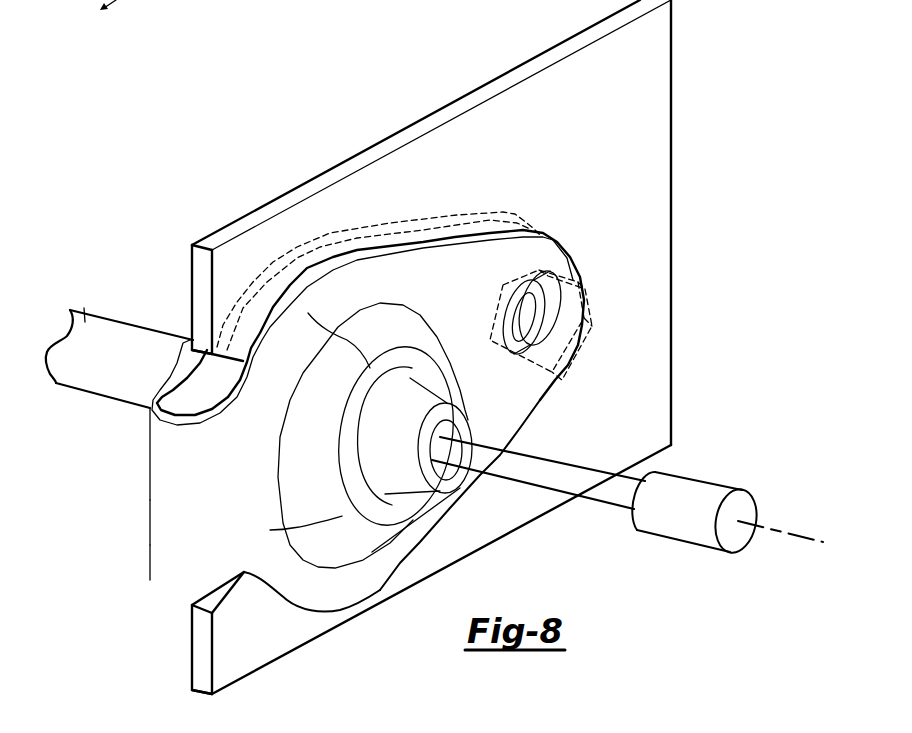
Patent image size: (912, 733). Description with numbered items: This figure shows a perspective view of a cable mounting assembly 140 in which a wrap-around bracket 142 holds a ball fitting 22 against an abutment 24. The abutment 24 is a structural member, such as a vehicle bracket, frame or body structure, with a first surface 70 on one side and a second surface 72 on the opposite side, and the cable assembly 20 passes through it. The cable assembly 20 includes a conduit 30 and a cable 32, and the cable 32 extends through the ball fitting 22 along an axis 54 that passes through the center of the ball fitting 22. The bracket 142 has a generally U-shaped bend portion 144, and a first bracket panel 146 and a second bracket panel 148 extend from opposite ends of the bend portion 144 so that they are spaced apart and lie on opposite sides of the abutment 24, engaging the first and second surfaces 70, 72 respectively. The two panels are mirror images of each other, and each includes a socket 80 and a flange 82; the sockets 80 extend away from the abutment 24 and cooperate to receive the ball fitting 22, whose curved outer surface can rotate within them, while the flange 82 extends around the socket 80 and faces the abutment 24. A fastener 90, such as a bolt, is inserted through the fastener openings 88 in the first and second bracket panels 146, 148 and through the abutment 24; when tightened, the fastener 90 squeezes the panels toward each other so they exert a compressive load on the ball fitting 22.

The cable assembly 20 is at (98, 393).
The ball fitting 22 is at (443, 490).
The abutment 24 is at (447, 107).
The conduit 30 is at (85, 318).
The cable 32 is at (607, 473).
The axis 54 is at (808, 535).
The first surface 70 is at (583, 30).
The second surface 72 is at (610, 48).
The socket 80 is at (377, 590).
The flange 82 is at (537, 420).
The fastener opening 88 is at (549, 279).
The fastener 90 is at (590, 318).
The cable mounting assembly 140 is at (277, 165).
The bracket 142 is at (244, 572).
The bend portion 144 is at (150, 430).
The first bracket panel 146 is at (240, 283).
The second bracket panel 148 is at (273, 604).